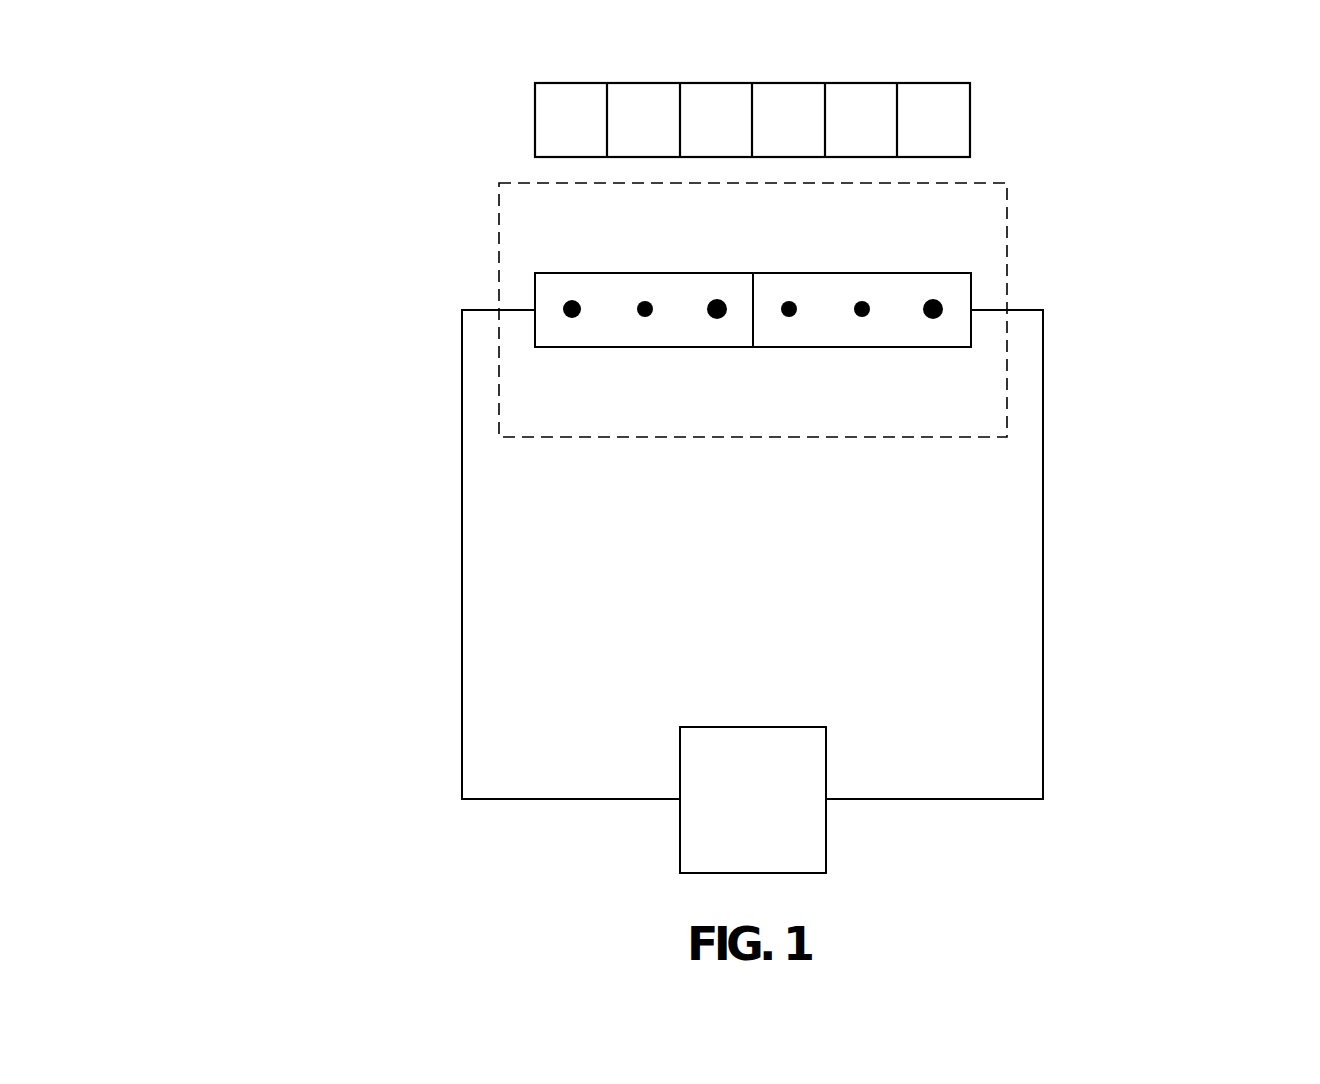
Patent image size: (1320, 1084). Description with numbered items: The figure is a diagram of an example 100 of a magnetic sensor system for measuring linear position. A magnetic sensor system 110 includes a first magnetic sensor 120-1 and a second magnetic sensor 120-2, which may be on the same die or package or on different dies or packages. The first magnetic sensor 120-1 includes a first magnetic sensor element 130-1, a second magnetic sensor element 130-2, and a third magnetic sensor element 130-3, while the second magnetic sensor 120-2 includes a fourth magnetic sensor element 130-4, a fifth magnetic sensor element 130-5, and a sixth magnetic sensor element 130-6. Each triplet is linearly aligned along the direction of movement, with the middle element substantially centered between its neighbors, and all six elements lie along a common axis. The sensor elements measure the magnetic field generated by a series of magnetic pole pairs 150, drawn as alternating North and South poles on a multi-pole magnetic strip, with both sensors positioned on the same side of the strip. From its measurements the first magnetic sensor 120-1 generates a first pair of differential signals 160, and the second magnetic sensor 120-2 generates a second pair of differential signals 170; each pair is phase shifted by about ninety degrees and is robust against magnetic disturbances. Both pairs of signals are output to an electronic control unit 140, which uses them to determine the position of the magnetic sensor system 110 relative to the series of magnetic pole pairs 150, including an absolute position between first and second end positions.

The example magnetic sensor system 100 is at (247, 69).
The magnetic sensor system 110 is at (499, 225).
The first magnetic sensor 120-1 is at (615, 273).
The second magnetic sensor 120-2 is at (909, 273).
The first magnetic sensor element 130-1 is at (572, 318).
The second magnetic sensor element 130-2 is at (645, 318).
The third magnetic sensor element 130-3 is at (717, 318).
The fourth magnetic sensor element 130-4 is at (789, 318).
The fifth magnetic sensor element 130-5 is at (862, 318).
The sixth magnetic sensor element 130-6 is at (933, 318).
The electronic control unit 140 is at (733, 825).
The series of magnetic pole pairs 150 is at (970, 113).
The first pair of differential signals 160 is at (444, 622).
The second pair of differential signals 170 is at (1062, 622).